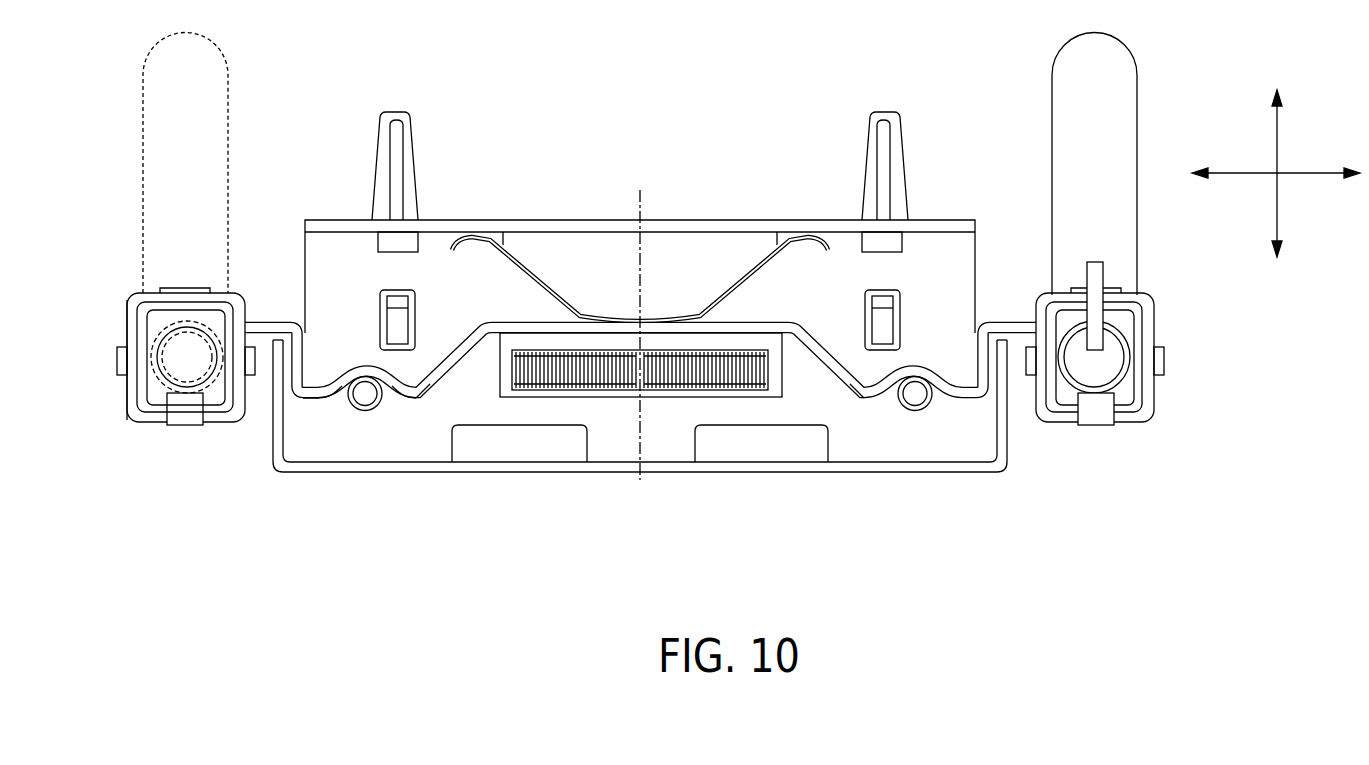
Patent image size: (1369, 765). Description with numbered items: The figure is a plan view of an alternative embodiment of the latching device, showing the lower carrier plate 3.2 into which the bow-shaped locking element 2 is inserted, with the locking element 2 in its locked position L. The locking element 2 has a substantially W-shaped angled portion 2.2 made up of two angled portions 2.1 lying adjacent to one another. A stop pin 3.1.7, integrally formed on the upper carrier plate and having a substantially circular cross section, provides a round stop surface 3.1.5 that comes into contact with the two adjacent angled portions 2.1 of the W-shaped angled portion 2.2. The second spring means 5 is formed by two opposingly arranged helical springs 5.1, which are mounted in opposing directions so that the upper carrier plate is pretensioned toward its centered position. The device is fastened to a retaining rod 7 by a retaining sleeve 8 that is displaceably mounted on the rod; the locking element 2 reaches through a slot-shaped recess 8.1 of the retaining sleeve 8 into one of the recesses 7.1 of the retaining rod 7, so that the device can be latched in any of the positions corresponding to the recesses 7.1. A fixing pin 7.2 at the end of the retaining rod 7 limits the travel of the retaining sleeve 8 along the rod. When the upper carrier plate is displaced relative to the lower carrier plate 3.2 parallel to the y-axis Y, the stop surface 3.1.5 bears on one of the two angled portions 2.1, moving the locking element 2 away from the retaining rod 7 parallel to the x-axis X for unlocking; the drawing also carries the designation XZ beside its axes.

The locking element 2 is at (258, 322).
The angled portions 2.1 is at (330, 393).
The W-shaped angled portion 2.2 is at (408, 412).
The stop surface 3.1.5 is at (365, 408).
The stop pin 3.1.7 is at (380, 403).
The lower carrier plate 3.2 is at (707, 243).
The second spring means 5 is at (713, 412).
The helical springs 5.1 is at (558, 390).
The retaining rod 7 is at (158, 80).
The recesses 7.1 is at (153, 348).
The fixing pin 7.2 is at (1100, 275).
The retaining sleeve 8 is at (158, 413).
The slot-shaped recess 8.1 is at (157, 325).
The locked position L is at (114, 300).
The center plane XZ is at (645, 192).
The x-axis X is at (1264, 173).
The y-axis Y is at (1276, 191).